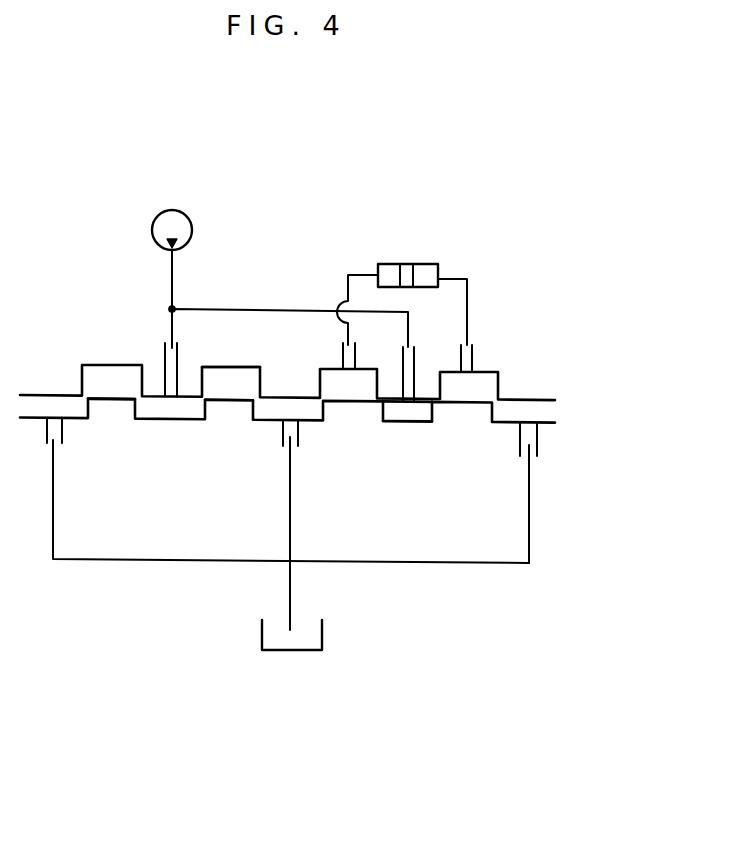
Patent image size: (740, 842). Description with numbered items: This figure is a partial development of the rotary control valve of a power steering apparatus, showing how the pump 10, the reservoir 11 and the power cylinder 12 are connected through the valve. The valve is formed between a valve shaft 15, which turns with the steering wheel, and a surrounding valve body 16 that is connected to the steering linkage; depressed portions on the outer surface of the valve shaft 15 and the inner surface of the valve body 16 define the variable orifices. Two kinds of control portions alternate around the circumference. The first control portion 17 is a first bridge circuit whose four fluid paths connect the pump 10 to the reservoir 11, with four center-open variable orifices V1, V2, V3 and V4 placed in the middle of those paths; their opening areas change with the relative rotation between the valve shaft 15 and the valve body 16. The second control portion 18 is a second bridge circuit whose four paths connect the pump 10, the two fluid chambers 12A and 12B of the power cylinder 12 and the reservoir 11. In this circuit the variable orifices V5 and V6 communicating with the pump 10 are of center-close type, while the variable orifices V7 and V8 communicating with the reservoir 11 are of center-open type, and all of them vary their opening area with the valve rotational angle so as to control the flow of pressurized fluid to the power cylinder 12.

The pump 10 is at (182, 211).
The reservoir 11 is at (295, 650).
The power cylinder 12 is at (422, 233).
The fluid chamber 12A is at (388, 265).
The fluid chamber 12B is at (437, 265).
The valve shaft 15 is at (542, 430).
The valve body 16 is at (530, 390).
The first control portion 17 is at (140, 315).
The second control portion 18 is at (477, 302).
The variable orifice V1 is at (145, 402).
The variable orifice V2 is at (200, 402).
The variable orifice V3 is at (87, 385).
The variable orifice V4 is at (252, 392).
The variable orifice V5 is at (388, 405).
The variable orifice V6 is at (422, 405).
The variable orifice V7 is at (325, 392).
The variable orifice V8 is at (488, 390).